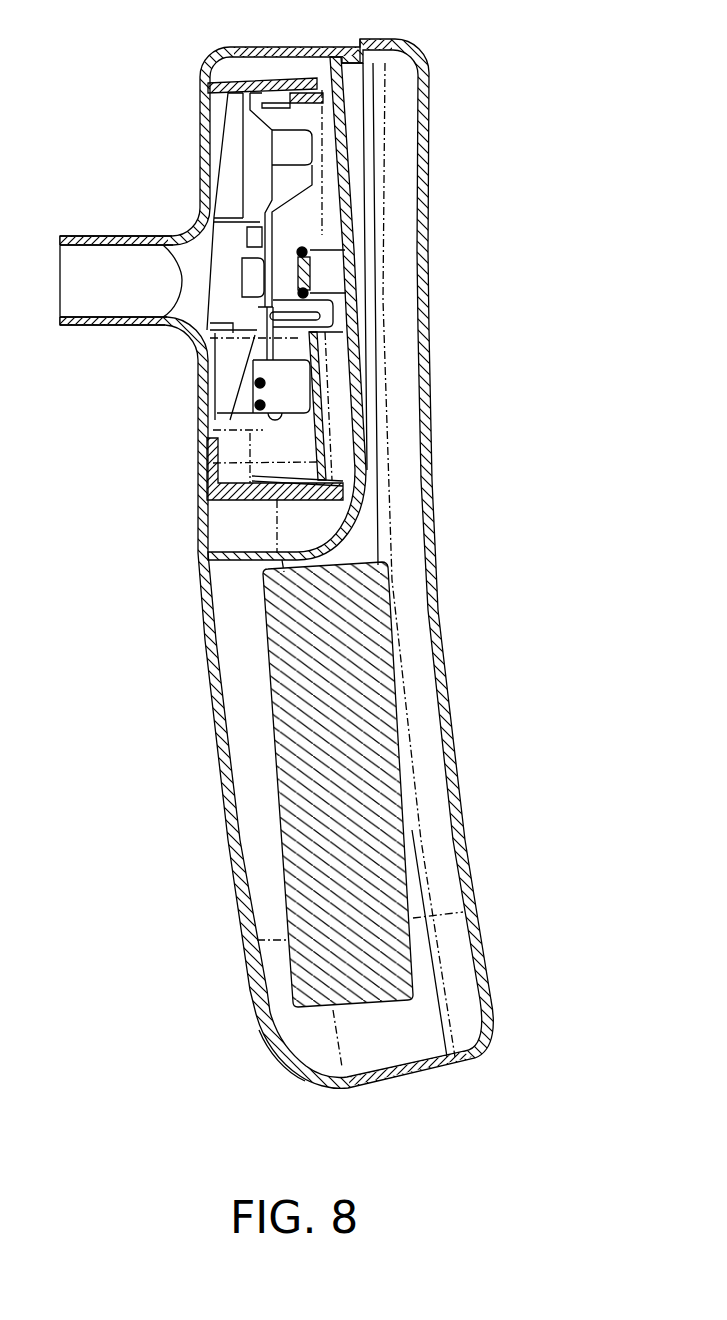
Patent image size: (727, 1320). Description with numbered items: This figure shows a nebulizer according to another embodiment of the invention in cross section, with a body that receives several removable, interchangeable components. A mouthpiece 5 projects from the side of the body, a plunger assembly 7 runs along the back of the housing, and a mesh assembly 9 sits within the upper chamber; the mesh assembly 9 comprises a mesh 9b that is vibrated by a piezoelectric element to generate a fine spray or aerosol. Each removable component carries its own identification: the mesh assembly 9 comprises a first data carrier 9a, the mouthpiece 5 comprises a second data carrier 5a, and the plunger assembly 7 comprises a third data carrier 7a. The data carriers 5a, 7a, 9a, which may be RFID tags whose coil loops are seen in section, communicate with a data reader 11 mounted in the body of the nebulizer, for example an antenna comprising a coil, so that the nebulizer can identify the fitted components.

The mouthpiece 5 is at (100, 323).
The second data carrier 5a is at (202, 486).
The plunger assembly 7 is at (313, 227).
The third data carrier 7a is at (308, 252).
The mesh assembly 9 is at (247, 156).
The data carrier 9a is at (260, 405).
The mesh 9b is at (242, 275).
The data reader 11 is at (366, 253).